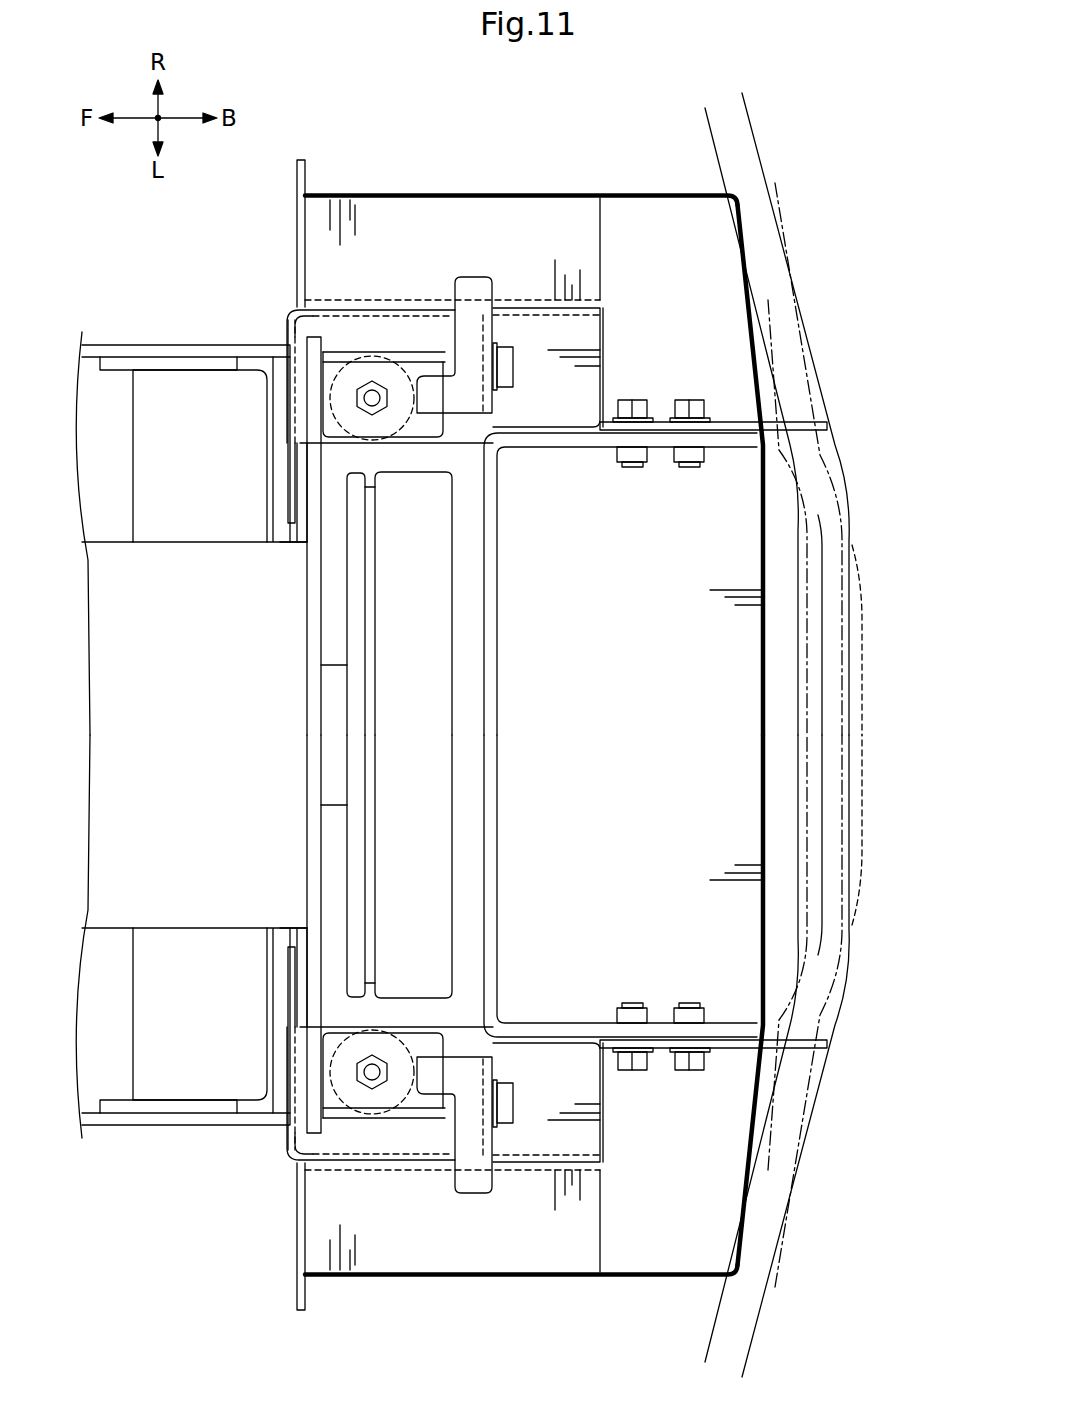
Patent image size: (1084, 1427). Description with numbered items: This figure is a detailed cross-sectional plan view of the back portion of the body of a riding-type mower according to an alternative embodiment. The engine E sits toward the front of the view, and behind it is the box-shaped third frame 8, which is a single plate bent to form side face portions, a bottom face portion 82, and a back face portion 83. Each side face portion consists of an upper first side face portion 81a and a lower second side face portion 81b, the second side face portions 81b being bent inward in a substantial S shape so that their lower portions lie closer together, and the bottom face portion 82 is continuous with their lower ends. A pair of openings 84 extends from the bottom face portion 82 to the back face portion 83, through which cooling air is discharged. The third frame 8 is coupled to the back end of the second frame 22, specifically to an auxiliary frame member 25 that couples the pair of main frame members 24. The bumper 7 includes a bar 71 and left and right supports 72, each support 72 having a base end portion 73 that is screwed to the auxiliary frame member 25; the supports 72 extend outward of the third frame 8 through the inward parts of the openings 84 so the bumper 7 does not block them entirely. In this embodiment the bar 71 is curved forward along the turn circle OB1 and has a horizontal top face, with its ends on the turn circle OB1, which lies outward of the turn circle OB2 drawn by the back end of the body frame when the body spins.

The bumper 7 is at (818, 735).
The third frame 8 is at (584, 711).
The second frame 22 is at (191, 739).
The main frame member 24 is at (191, 735).
The auxiliary frame member 25 is at (497, 803).
The bar 71 is at (825, 740).
The support 72 is at (805, 420).
The base end portion 73 is at (493, 398).
The first side face portion 81a is at (425, 193).
The second side face portion 81b is at (530, 238).
The bottom face portion 82 is at (652, 972).
The back face portion 83 is at (762, 738).
The opening 84 is at (660, 286).
The engine E is at (212, 553).
The turn circle OB1 is at (777, 183).
The turn circle OB2 is at (770, 310).